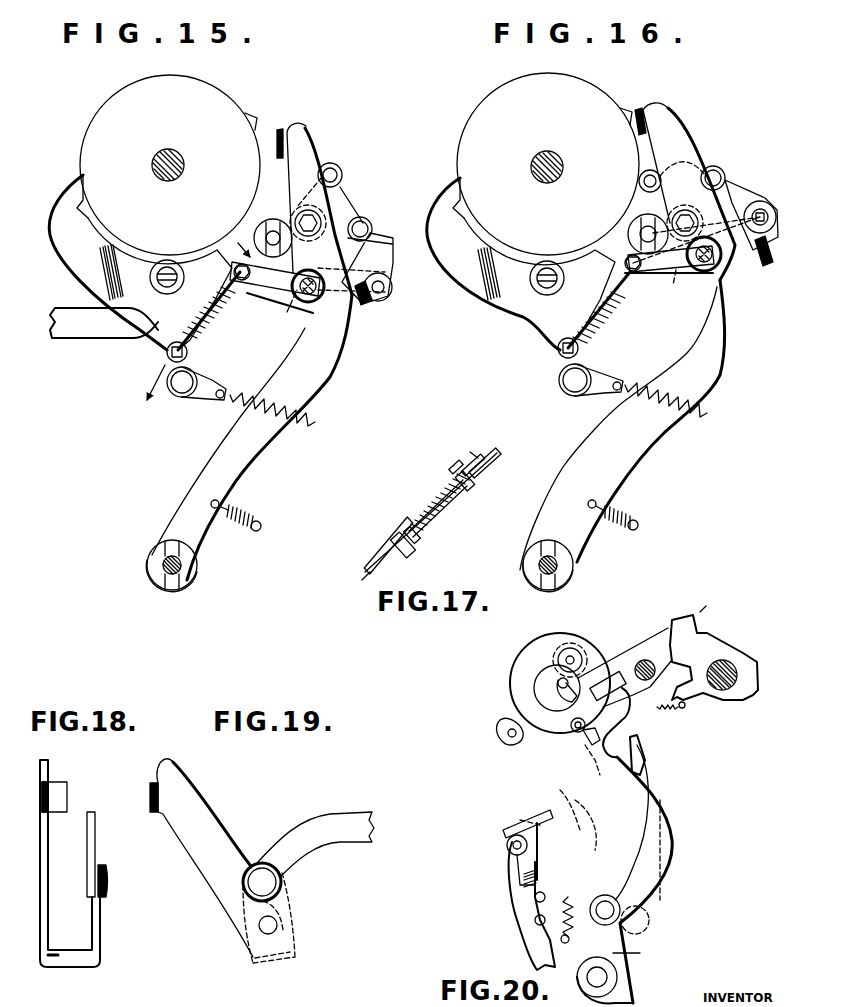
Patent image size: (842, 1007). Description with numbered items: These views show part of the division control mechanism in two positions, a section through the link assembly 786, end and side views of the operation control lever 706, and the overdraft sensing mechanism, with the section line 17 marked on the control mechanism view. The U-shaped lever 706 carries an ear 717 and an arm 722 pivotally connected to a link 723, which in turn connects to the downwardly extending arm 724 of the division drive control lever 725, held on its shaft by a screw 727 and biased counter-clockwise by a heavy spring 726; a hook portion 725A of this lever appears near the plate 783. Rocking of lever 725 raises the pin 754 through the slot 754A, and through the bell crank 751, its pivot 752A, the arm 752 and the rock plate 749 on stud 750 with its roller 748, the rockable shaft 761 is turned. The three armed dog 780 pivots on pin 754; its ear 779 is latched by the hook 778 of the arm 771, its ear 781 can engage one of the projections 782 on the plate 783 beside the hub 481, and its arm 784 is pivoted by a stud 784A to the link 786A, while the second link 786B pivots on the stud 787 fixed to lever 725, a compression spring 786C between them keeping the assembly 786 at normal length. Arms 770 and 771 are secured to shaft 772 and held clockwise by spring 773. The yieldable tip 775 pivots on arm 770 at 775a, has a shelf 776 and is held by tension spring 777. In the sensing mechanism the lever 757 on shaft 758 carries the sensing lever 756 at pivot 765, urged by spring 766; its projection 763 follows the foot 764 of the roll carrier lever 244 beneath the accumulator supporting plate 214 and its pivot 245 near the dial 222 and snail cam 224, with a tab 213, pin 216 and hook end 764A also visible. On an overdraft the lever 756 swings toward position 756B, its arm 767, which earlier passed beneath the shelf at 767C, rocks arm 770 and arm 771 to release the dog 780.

In FIG. 15, the section line 17 is at (198, 330).
In FIG. 20, the tab 213 is at (503, 736).
In FIG. 20, the accumulator supporting plate 214 is at (740, 658).
In FIG. 20, the pin 216 is at (558, 682).
In FIG. 20, the dial 222 is at (541, 641).
In FIG. 20, the snail cam 224 is at (534, 690).
In FIG. 20, the roll carrier lever 244 is at (690, 617).
In FIG. 20, the link pin 245 is at (646, 660).
In FIG. 15, the hub 481 is at (156, 165).
In FIG. 16, the hub 481 is at (530, 167).
In FIG. 18, the operation control lever 706 is at (102, 910).
In FIG. 19, the operation control lever 706 is at (193, 807).
In FIG. 18, the ear 717 is at (67, 795).
In FIG. 19, the ear 717 is at (150, 788).
In FIG. 18, the arm 722 is at (100, 940).
In FIG. 19, the arm 722 is at (282, 897).
In FIG. 15, the link 723 is at (80, 328).
In FIG. 18, the link 723 is at (96, 838).
In FIG. 19, the link 723 is at (332, 820).
In FIG. 15, the downwardly extending arm 724 is at (216, 388).
In FIG. 16, the downwardly extending arm 724 is at (623, 380).
In FIG. 15, the division drive control lever 725 is at (112, 290).
In FIG. 16, the division drive control lever 725 is at (520, 317).
In FIG. 17, the division drive control lever 725 is at (366, 573).
In FIG. 15, the hook 725A is at (75, 187).
In FIG. 16, the hook 725A is at (445, 187).
In FIG. 15, the heavy spring 726 is at (297, 413).
In FIG. 16, the heavy spring 726 is at (687, 413).
In FIG. 15, the screw 727 is at (167, 285).
In FIG. 16, the screw 727 is at (542, 300).
In FIG. 15, the roller 748 is at (332, 165).
In FIG. 16, the roller 748 is at (640, 182).
In FIG. 15, the rock plate 749 is at (337, 192).
In FIG. 16, the rock plate 749 is at (687, 173).
In FIG. 15, the stud 750 is at (312, 218).
In FIG. 16, the stud 750 is at (697, 212).
In FIG. 15, the bell crank 751 is at (385, 262).
In FIG. 16, the bell crank 751 is at (727, 180).
In FIG. 15, the arm 752 is at (273, 219).
In FIG. 16, the arm 752 is at (645, 214).
In FIG. 15, the pivot 752A is at (385, 292).
In FIG. 16, the pivot 752A is at (760, 201).
In FIG. 15, the pin 754 is at (309, 295).
In FIG. 16, the pin 754 is at (699, 268).
In FIG. 15, the slot 754A is at (287, 312).
In FIG. 16, the slot 754A is at (673, 290).
In FIG. 20, the sensing lever 756 is at (655, 797).
In FIG. 20, the alternate position of lever 756 756B is at (660, 873).
In FIG. 20, the lever 757 is at (641, 954).
In FIG. 20, the shaft 758 is at (597, 977).
In FIG. 15, the rockable shaft 761 is at (266, 236).
In FIG. 16, the rockable shaft 761 is at (643, 232).
In FIG. 20, the projection 763 is at (637, 747).
In FIG. 20, the foot 764 is at (620, 733).
In FIG. 20, the hook end 764A is at (590, 747).
In FIG. 20, the pivot 765 is at (640, 917).
In FIG. 20, the spring 766 is at (568, 907).
In FIG. 20, the arm 767 is at (567, 795).
In FIG. 20, the position of arm 767 767C is at (503, 830).
In FIG. 20, the arm 770 is at (528, 953).
In FIG. 15, the arm 771 is at (215, 462).
In FIG. 16, the arm 771 is at (616, 466).
In FIG. 15, the rockable shaft 772 is at (163, 566).
In FIG. 16, the rockable shaft 772 is at (560, 565).
In FIG. 15, the spring 773 is at (240, 507).
In FIG. 16, the spring 773 is at (623, 510).
In FIG. 20, the yieldable tip 775 is at (517, 858).
In FIG. 20, the pivot 775a is at (507, 844).
In FIG. 20, the shelf 776 is at (505, 825).
In FIG. 20, the tension spring 777 is at (520, 880).
In FIG. 15, the hook 778 is at (364, 241).
In FIG. 16, the hook 778 is at (722, 203).
In FIG. 15, the ear 779 is at (365, 307).
In FIG. 16, the ear 779 is at (767, 265).
In FIG. 15, the three armed dog 780 is at (303, 143).
In FIG. 16, the three armed dog 780 is at (670, 125).
In FIG. 15, the ear 781 is at (279, 128).
In FIG. 16, the ear 781 is at (638, 112).
In FIG. 15, the projection 782 is at (258, 117).
In FIG. 16, the projection 782 is at (623, 110).
In FIG. 15, the plate 783 is at (222, 90).
In FIG. 16, the plate 783 is at (573, 90).
In FIG. 15, the arm 784 is at (270, 290).
In FIG. 16, the arm 784 is at (657, 275).
In FIG. 17, the arm 784 is at (489, 459).
In FIG. 17, the stud 784A is at (478, 458).
In FIG. 15, the link assembly 786 is at (213, 336).
In FIG. 16, the link assembly 786 is at (607, 333).
In FIG. 17, the link assembly 786 is at (450, 477).
In FIG. 17, the link 786A is at (468, 482).
In FIG. 17, the second link 786B is at (453, 466).
In FIG. 17, the compression spring 786C is at (448, 505).
In FIG. 15, the stud 787 is at (166, 352).
In FIG. 16, the stud 787 is at (557, 350).
In FIG. 17, the stud 787 is at (412, 547).